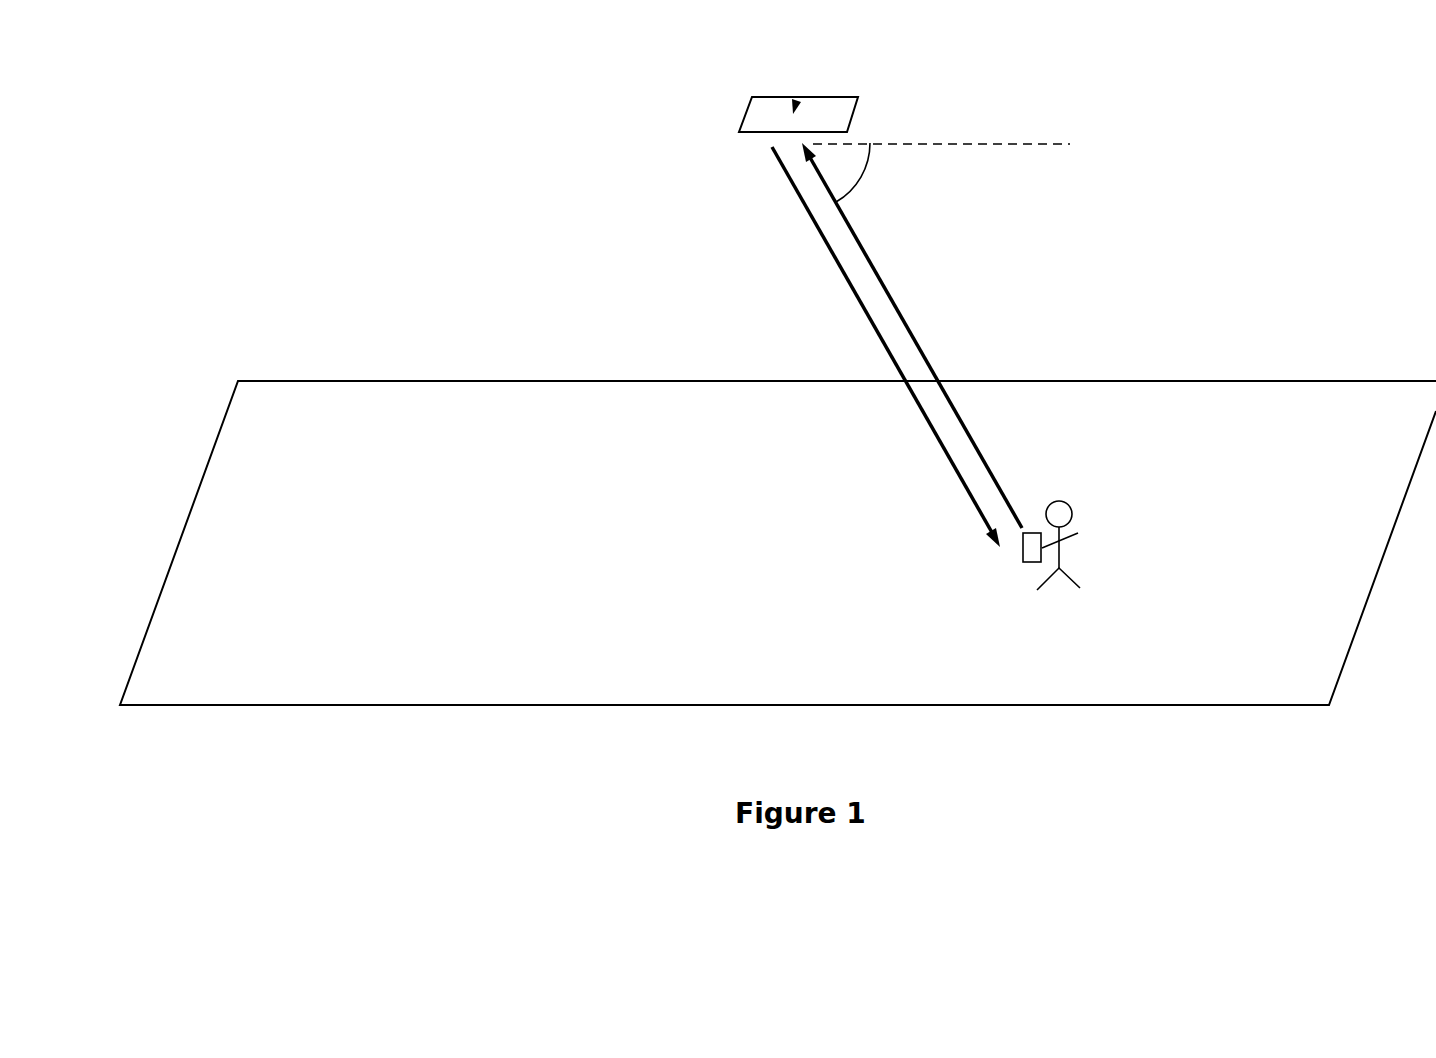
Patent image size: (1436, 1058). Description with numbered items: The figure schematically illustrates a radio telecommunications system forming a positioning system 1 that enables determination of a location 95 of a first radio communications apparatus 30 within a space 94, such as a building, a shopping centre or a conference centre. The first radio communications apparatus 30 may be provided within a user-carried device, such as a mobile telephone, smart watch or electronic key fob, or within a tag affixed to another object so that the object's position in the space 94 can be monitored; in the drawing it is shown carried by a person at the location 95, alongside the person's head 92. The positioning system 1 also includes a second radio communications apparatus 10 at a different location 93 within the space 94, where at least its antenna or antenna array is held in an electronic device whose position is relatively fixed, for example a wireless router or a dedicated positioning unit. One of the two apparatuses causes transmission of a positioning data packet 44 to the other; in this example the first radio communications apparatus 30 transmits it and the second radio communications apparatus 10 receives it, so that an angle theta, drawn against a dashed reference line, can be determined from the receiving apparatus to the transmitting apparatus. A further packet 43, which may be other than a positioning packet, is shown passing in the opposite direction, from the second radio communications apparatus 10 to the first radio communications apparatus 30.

The positioning system 1 is at (462, 265).
The second radio communications apparatus 10 is at (750, 110).
The location of the second radio communications apparatus 93 is at (795, 110).
The space 94 is at (1326, 395).
The positioning data packet 44 is at (857, 232).
The packet 43 is at (842, 270).
The first radio communications apparatus 30 is at (1028, 562).
The head of person 92 is at (1067, 503).
The location of the first radio communications apparatus 95 is at (1094, 543).